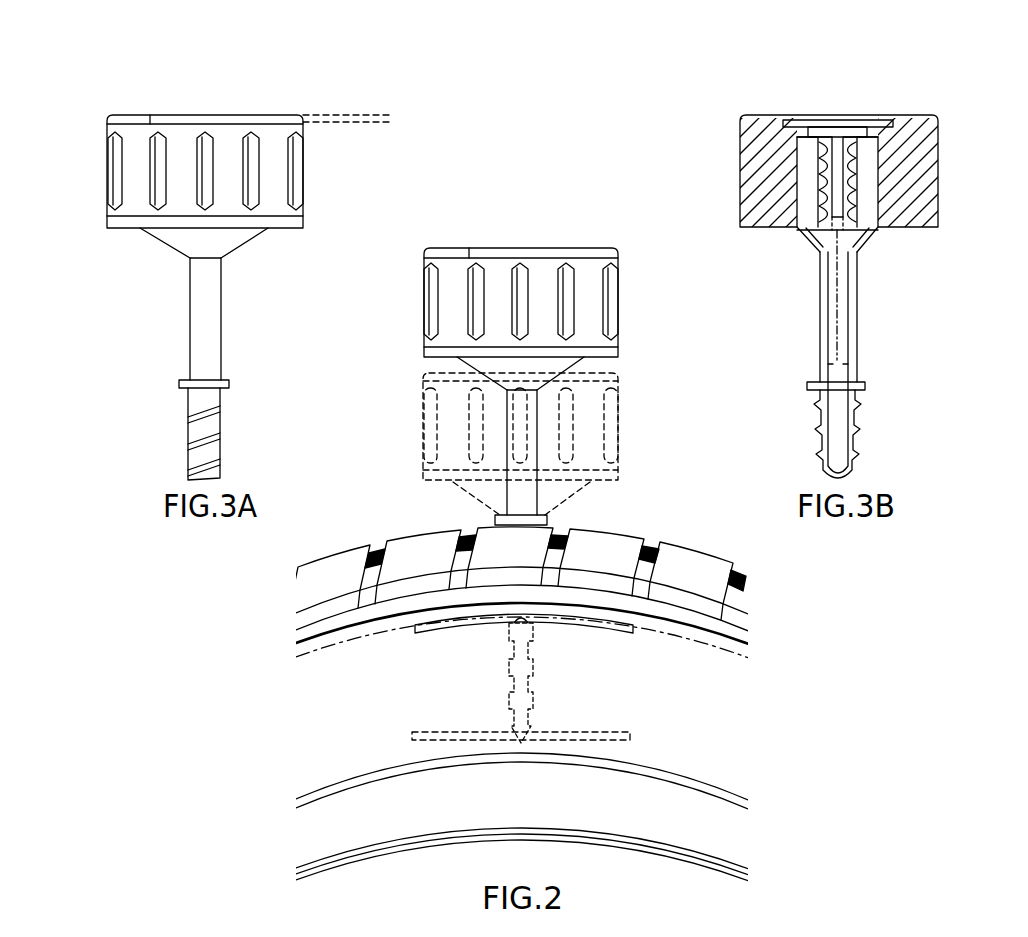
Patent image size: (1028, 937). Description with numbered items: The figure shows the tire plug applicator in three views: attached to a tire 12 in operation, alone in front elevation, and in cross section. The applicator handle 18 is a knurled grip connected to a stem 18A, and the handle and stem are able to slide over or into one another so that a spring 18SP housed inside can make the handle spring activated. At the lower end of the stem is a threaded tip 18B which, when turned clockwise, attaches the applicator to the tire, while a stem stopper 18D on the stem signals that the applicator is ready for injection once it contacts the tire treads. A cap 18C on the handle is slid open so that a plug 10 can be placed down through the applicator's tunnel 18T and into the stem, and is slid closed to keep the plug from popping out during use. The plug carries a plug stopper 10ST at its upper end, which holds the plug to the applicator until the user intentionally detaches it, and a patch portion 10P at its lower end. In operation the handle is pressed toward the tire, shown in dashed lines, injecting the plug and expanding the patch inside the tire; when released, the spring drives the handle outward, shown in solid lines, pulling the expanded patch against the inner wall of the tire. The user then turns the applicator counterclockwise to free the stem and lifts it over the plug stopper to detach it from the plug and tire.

In FIG. 3B, the plug 10 is at (837, 303).
In FIG. 2, the patch portion 10P is at (470, 622).
In FIG. 3B, the plug stopper 10ST is at (815, 128).
In FIG. 2, the tire 12 is at (737, 575).
In FIG. 3A, the applicator handle 18 is at (185, 155).
In FIG. 2, the applicator handle 18 is at (500, 270).
In FIG. 3A, the stem 18A is at (197, 317).
In FIG. 3B, the stem 18A is at (820, 318).
In FIG. 3A, the threaded tip 18B is at (220, 432).
In FIG. 3A, the cap 18C is at (372, 122).
In FIG. 3B, the cap 18C is at (917, 120).
In FIG. 3A, the stem stopper 18D is at (178, 384).
In FIG. 2, the stem stopper 18D is at (495, 520).
In FIG. 3B, the spring 18SP is at (825, 203).
In FIG. 3B, the tunnel 18T is at (850, 203).